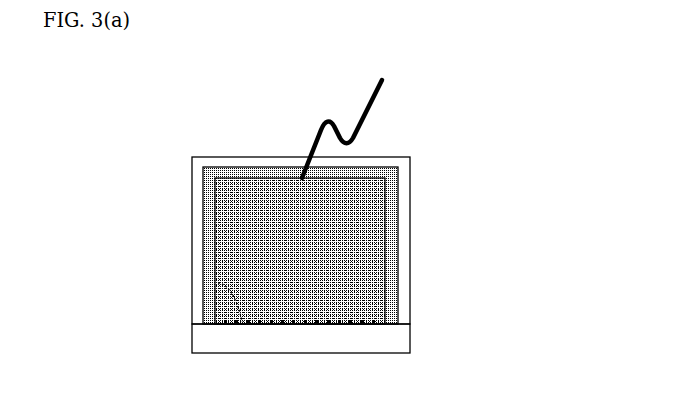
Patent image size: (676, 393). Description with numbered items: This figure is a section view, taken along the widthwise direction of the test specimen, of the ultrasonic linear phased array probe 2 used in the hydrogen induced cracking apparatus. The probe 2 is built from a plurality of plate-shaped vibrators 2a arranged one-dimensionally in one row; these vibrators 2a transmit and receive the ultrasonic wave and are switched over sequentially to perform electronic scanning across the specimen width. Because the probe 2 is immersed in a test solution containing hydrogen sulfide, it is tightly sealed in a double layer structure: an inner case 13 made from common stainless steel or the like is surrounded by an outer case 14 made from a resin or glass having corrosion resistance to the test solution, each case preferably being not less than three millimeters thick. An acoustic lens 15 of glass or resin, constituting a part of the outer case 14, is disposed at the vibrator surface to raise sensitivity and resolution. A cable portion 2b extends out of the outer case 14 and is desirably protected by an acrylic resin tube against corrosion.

The linear phased array probe 2 is at (465, 120).
The vibrators 2a is at (203, 290).
The cable portion 2b is at (374, 112).
The inner case 13 is at (203, 262).
The outer case 14 is at (197, 208).
The acoustic lens 15 is at (388, 335).